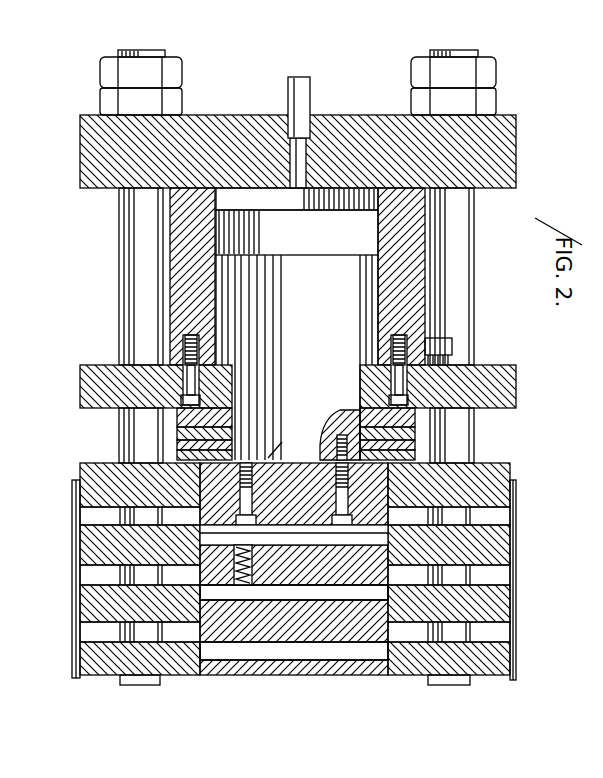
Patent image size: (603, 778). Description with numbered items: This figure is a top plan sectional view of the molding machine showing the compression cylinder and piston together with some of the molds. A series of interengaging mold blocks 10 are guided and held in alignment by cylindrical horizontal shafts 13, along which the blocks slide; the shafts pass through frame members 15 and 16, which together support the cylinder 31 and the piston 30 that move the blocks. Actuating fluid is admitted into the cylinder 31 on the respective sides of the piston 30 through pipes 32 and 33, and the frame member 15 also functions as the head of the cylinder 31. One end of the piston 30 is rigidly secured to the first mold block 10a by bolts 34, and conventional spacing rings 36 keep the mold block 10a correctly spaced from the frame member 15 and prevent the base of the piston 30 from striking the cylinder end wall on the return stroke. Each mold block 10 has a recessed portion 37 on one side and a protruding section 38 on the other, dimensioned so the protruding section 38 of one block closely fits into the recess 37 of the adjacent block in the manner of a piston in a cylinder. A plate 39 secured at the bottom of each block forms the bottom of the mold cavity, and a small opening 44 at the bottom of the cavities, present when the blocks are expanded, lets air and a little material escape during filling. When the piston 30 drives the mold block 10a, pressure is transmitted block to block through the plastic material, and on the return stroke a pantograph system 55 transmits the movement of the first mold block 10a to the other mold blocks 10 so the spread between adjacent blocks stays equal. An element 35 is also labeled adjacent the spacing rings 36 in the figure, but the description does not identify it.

The mold blocks 10 is at (503, 557).
The first mold block 10a is at (492, 470).
The shafts 13 is at (132, 300).
The frame member 15 is at (100, 376).
The frame member 16 is at (240, 127).
The piston 30 is at (242, 285).
The cylinder 31 is at (376, 275).
The pipe 32 is at (288, 100).
The pipe 33 is at (452, 348).
The bolts 34 is at (322, 462).
The upper layered block 35 is at (195, 508).
The spacing rings 36 is at (175, 442).
The recessed portion 37 is at (340, 660).
The protruding section 38 is at (240, 660).
The plate 39 is at (200, 528).
The opening 44 is at (290, 594).
The pantograph system 55 is at (78, 645).